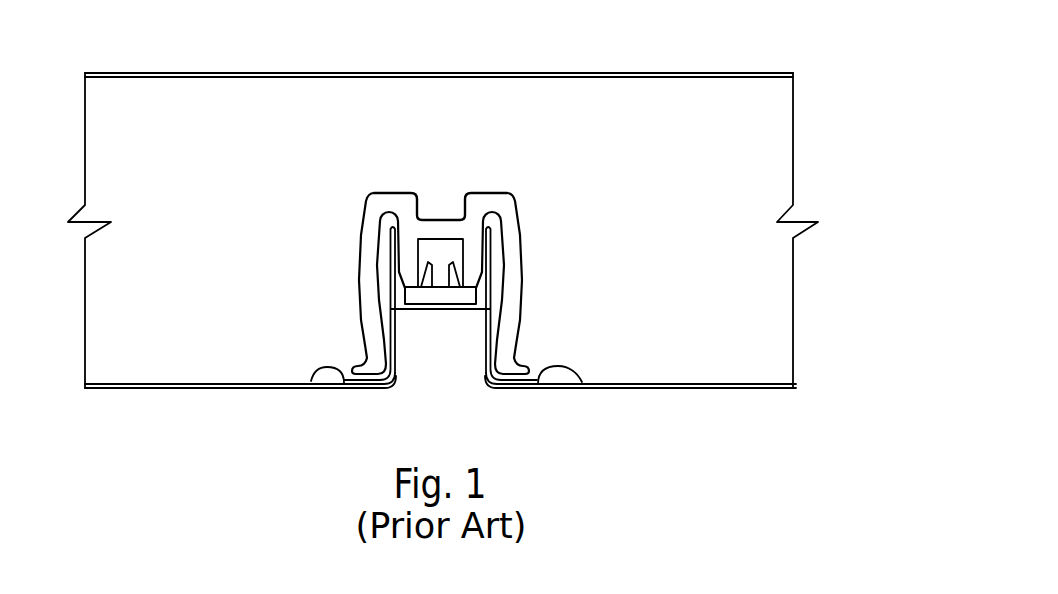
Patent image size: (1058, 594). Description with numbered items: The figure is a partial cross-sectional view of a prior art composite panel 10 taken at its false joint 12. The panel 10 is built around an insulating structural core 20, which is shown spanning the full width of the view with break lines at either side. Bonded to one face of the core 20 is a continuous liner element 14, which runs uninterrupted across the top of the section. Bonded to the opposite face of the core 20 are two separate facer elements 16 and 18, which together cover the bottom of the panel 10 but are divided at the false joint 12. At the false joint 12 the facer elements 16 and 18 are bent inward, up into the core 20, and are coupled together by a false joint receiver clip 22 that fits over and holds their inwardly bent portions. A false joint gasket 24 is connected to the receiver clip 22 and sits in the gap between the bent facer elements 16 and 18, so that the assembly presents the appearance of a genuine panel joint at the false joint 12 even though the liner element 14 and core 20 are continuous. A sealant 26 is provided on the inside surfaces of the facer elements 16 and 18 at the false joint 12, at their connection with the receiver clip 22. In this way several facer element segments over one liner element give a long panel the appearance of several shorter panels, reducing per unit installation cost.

The panel 10 is at (702, 50).
The false joint 12 is at (427, 362).
The continuous liner element 14 is at (184, 73).
The facer element 16 is at (176, 391).
The facer element 18 is at (713, 391).
The insulating structural core 20 is at (786, 144).
The false joint receiver clip 22 is at (400, 196).
The false joint gasket 24 is at (465, 310).
The sealant 26 is at (311, 381).